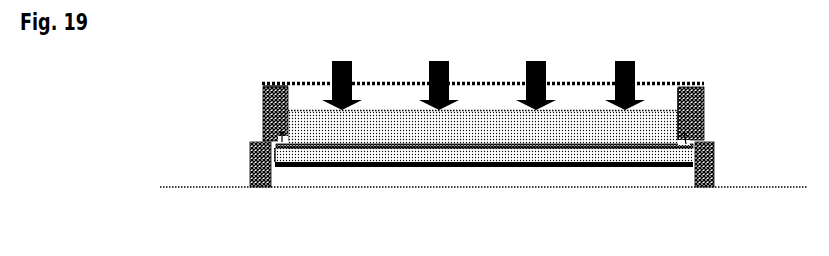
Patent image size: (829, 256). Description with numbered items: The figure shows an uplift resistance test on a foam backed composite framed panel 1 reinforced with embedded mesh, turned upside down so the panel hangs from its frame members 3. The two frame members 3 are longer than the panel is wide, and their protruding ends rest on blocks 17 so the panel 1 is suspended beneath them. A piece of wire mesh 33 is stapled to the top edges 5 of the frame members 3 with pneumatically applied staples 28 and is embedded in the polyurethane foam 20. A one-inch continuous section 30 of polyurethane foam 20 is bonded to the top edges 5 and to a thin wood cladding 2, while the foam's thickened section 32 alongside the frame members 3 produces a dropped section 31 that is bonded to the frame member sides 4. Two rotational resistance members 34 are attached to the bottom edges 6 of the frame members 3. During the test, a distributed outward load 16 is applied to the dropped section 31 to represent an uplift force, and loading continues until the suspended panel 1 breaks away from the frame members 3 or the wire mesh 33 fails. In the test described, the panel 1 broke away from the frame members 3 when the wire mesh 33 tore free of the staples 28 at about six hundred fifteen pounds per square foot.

The panel 1 is at (608, 170).
The wood cladding 2 is at (578, 168).
The frame members 3 is at (262, 95).
The frame member sides 4 is at (704, 100).
The top edges 5 is at (293, 150).
The bottom edges 6 is at (273, 83).
The distributed outward load 16 is at (548, 68).
The blocks 17 is at (252, 190).
The polyurethane foam 20 is at (495, 128).
The staples 28 is at (262, 132).
The continuous section 30 is at (432, 152).
The dropped section 31 is at (662, 120).
The thickened section 32 is at (465, 127).
The wire mesh 33 is at (370, 150).
The rotational resistance members 34 is at (400, 82).